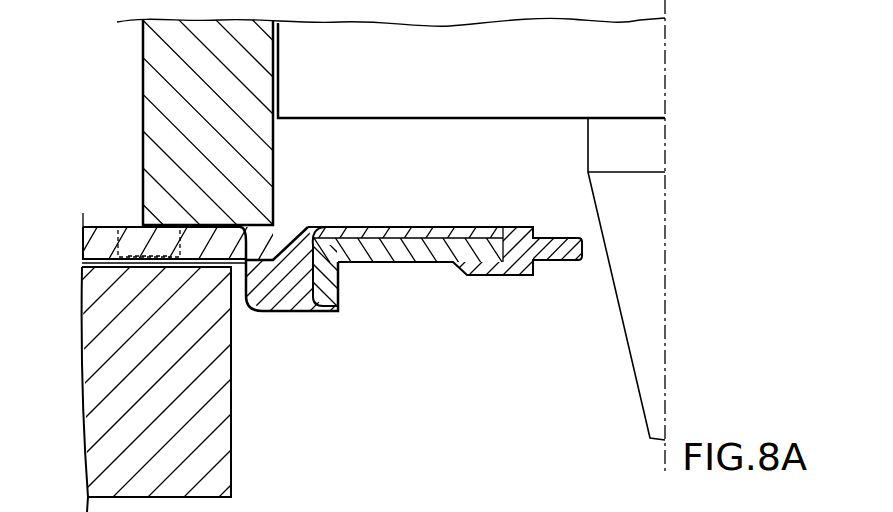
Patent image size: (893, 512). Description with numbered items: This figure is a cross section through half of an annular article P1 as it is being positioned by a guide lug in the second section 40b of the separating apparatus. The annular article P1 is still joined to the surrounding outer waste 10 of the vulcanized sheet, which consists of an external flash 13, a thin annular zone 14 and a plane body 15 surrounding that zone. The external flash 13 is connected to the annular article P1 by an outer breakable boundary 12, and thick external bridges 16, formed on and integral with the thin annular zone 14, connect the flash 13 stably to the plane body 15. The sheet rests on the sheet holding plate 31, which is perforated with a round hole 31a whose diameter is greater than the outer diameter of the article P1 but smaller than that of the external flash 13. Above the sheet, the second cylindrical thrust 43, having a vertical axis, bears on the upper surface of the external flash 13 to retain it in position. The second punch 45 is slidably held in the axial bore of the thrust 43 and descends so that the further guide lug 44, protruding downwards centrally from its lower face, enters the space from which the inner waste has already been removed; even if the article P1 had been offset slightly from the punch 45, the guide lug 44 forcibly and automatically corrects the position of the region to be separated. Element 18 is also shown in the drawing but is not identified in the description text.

The outer waste 10 is at (70, 205).
The outer breakable boundary 12 is at (263, 256).
The external flash 13 is at (216, 256).
The thin annular zone 14 is at (123, 224).
The plane body 15 is at (100, 247).
The external bridge 16 is at (137, 226).
The laminated plate 18 is at (377, 258).
The sheet holding plate 31 is at (218, 435).
The round hole 31a is at (232, 401).
The second section 40b is at (88, 129).
The second cylindrical thrust 43 is at (158, 77).
The further guide lug 44 is at (640, 202).
The second punch 45 is at (438, 77).
The annular article P1 is at (414, 272).